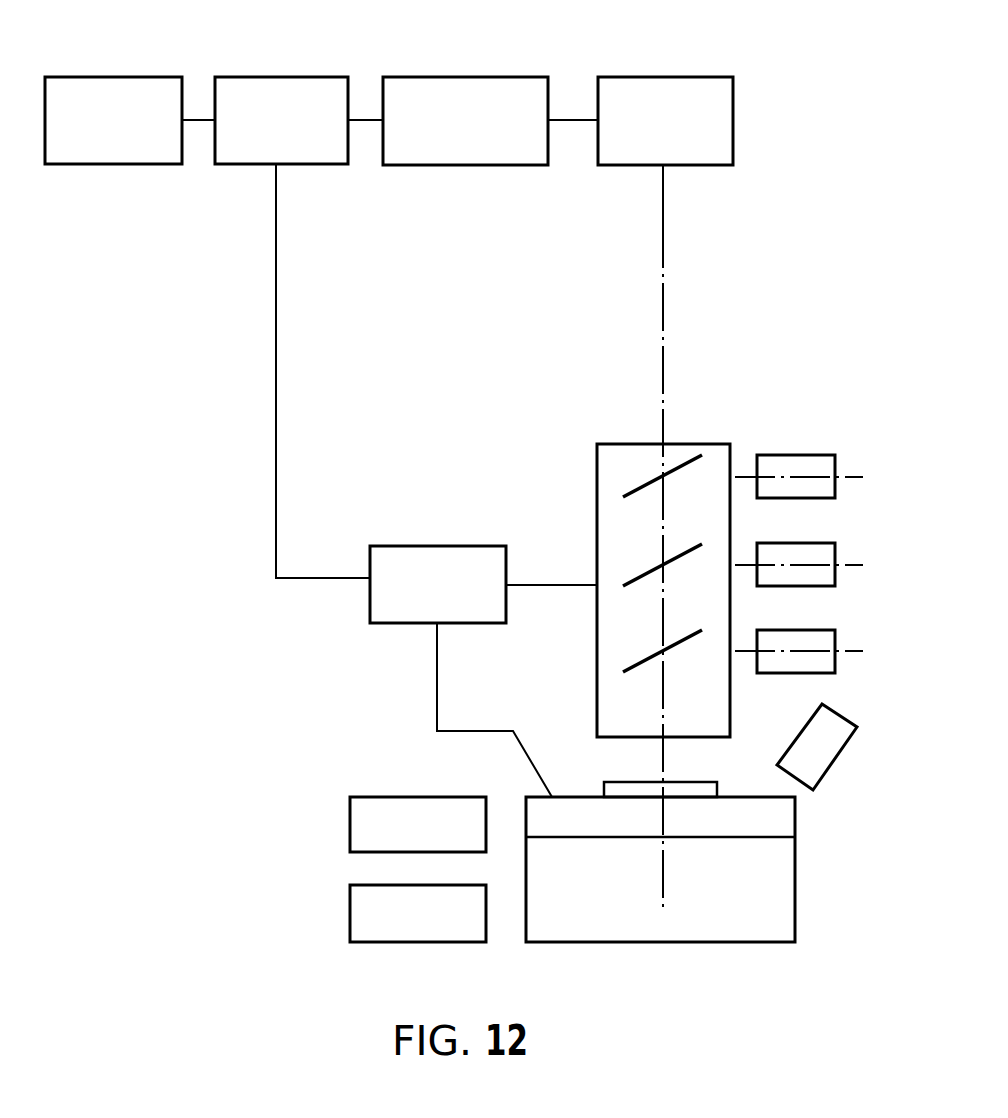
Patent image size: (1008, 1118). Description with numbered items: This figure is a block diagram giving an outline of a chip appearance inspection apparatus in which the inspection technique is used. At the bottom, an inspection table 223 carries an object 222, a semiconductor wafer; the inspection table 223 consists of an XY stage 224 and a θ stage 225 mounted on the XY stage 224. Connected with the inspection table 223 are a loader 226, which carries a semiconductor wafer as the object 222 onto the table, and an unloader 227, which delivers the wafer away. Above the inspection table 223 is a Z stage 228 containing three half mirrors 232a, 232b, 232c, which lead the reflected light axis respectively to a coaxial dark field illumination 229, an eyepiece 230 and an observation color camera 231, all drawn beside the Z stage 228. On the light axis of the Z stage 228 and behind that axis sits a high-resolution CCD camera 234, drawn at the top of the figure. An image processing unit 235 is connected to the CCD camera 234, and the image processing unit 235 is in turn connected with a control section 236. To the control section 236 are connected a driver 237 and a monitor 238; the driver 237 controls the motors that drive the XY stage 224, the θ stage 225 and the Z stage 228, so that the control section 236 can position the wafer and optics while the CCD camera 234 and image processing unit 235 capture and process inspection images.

The object 222 is at (717, 782).
The inspection table 223 is at (793, 748).
The XY stage 224 is at (687, 875).
The θ stage 225 is at (755, 827).
The loader 226 is at (350, 823).
The unloader 227 is at (350, 912).
The Z stage 228 is at (712, 444).
The coaxial dark field illumination 229 is at (835, 638).
The eyepiece 230 is at (835, 550).
The observation color camera 231 is at (835, 464).
The half mirror 232a is at (632, 665).
The half mirror 232b is at (632, 578).
The half mirror 232c is at (632, 490).
The CCD camera 234 is at (667, 77).
The image processing unit 235 is at (462, 77).
The control section 236 is at (285, 77).
The driver 237 is at (440, 546).
The monitor 238 is at (116, 77).